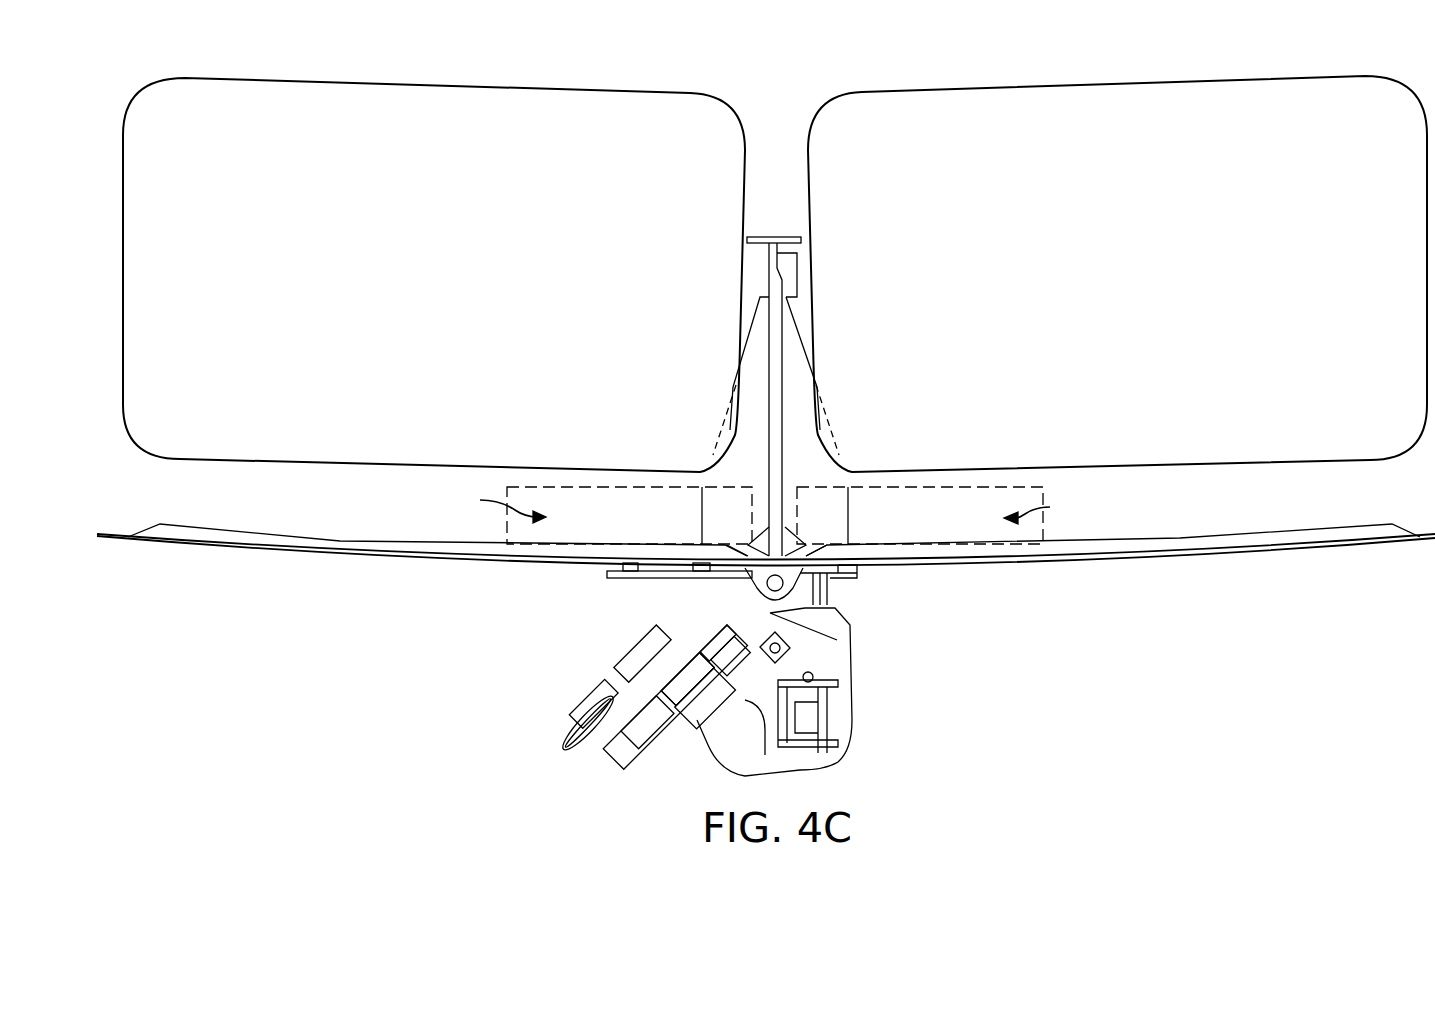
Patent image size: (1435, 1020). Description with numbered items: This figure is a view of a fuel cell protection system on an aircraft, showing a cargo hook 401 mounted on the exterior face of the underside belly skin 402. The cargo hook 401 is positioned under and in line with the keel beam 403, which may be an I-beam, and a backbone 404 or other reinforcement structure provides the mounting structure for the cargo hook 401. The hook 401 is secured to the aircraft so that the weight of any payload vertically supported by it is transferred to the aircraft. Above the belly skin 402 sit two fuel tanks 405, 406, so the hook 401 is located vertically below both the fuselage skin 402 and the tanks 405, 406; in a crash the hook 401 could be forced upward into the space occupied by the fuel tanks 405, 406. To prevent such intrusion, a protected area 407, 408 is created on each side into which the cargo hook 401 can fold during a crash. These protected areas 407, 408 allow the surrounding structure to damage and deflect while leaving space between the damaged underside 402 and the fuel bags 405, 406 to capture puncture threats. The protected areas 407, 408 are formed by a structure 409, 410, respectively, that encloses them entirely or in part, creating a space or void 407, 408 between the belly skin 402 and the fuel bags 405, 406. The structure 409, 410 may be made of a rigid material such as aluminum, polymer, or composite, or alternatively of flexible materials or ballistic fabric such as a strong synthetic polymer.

The cargo hook 401 is at (612, 762).
The belly skin 402 is at (300, 553).
The keel beam 403 is at (797, 270).
The backbone 404 is at (756, 355).
The fuel tank 405 is at (438, 86).
The fuel tank 406 is at (1110, 86).
The protected area 407 is at (487, 504).
The protected area 408 is at (1062, 504).
The structure 409 is at (528, 487).
The structure 410 is at (1015, 487).